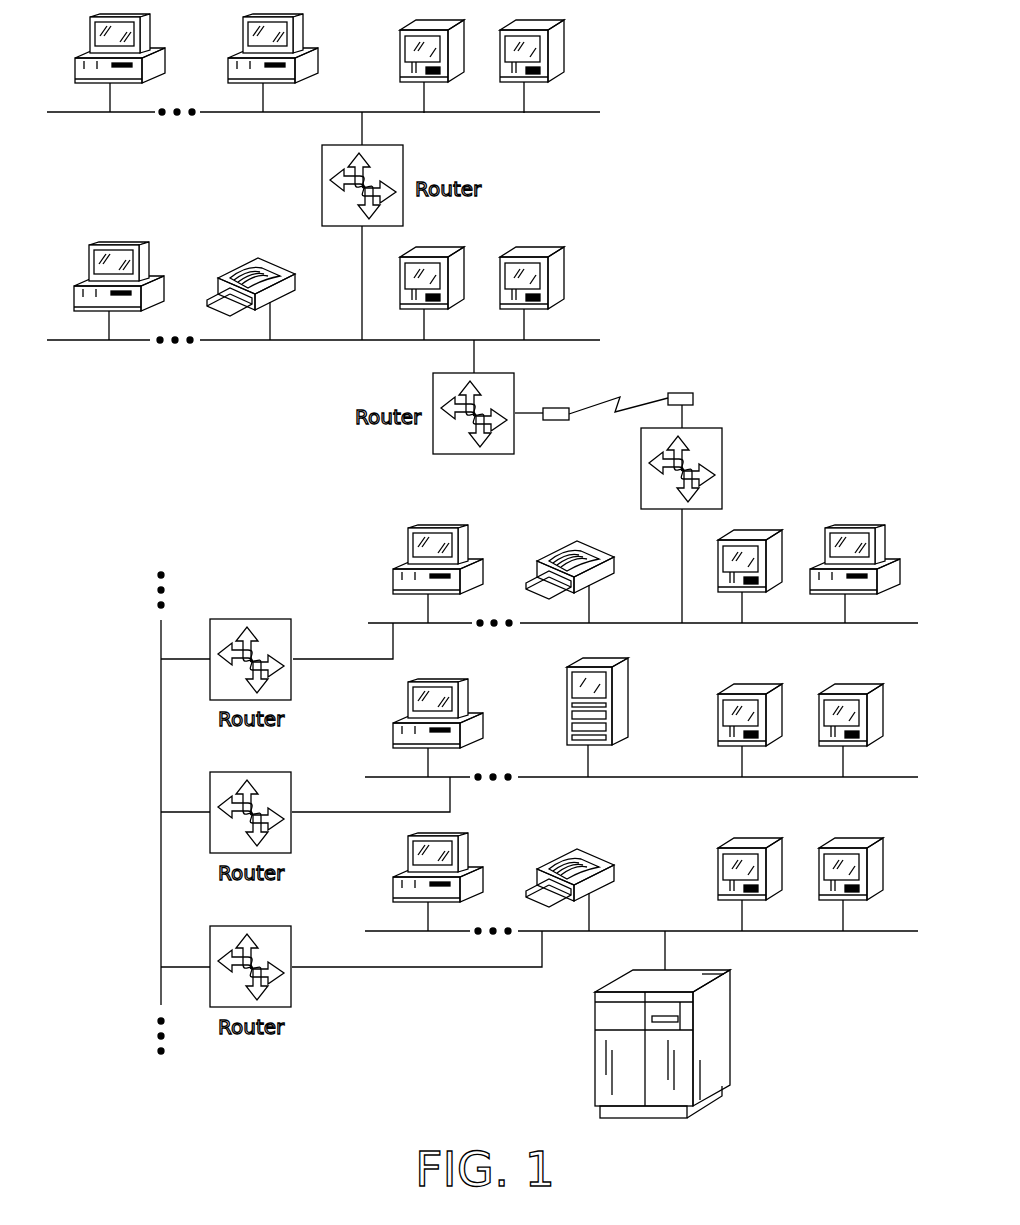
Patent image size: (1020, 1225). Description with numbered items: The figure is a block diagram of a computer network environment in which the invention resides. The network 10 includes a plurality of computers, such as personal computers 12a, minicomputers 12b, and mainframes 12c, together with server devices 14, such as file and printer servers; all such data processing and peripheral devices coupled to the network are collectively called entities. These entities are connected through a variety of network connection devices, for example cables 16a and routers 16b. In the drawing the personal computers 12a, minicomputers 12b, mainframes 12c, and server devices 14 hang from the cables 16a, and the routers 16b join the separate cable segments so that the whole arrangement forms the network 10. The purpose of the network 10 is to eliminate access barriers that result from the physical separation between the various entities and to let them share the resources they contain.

The network 10 is at (95, 795).
The personal computers 12a is at (400, 36).
The minicomputers 12b is at (893, 558).
The mainframes 12c is at (595, 1065).
The server devices 14 is at (84, 53).
The cables 16a is at (233, 120).
The routers 16b is at (717, 428).